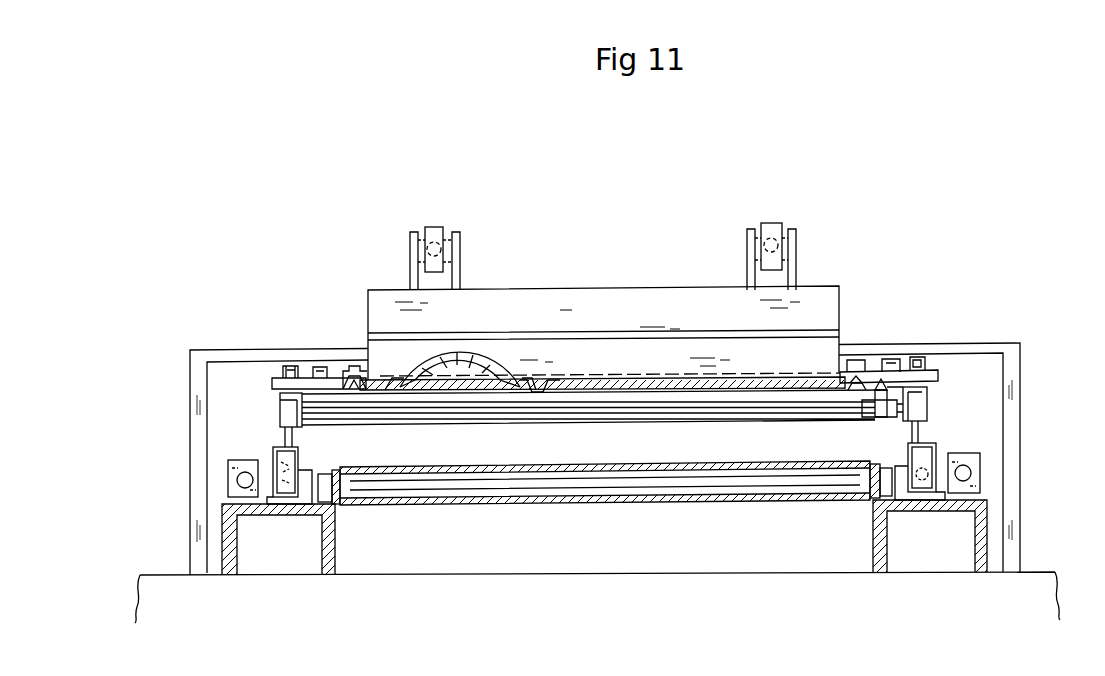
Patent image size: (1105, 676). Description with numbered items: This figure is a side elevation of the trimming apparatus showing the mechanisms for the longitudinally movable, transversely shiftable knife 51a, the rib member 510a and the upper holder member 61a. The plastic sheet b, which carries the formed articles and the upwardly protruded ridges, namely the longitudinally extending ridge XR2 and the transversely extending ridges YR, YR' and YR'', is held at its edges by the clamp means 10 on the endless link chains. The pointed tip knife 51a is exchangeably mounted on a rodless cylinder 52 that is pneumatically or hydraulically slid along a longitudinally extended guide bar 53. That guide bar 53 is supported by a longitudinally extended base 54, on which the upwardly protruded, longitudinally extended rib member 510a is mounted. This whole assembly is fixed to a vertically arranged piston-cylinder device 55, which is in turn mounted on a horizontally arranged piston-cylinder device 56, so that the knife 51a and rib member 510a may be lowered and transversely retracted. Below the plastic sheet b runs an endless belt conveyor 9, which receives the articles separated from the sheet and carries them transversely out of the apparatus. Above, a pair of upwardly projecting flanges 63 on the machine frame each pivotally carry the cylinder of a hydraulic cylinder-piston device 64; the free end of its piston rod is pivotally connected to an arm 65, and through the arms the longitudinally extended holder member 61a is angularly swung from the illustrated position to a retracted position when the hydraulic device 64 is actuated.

The endless belt conveyor 9 is at (597, 505).
The clamp means 10 is at (292, 370).
The pointed tip knife 51a is at (887, 382).
The rodless cylinder 52 is at (870, 418).
The guide bar 53 is at (812, 413).
The base 54 is at (283, 412).
The piston-cylinder device 55 is at (288, 460).
The piston-cylinder device 56 is at (288, 493).
The holder member 61a is at (536, 300).
The flange 63 is at (752, 267).
The cylinder-piston hydraulic device 64 is at (443, 232).
The arm 65 is at (426, 268).
The rib member 510a is at (738, 392).
The longitudinally extending ridge XR2 is at (463, 378).
The transversely extending ridge YR is at (343, 342).
The transversely extending ridge YR' is at (574, 309).
The transversely extending ridge YR'' is at (874, 327).
The plastic sheet b is at (618, 390).